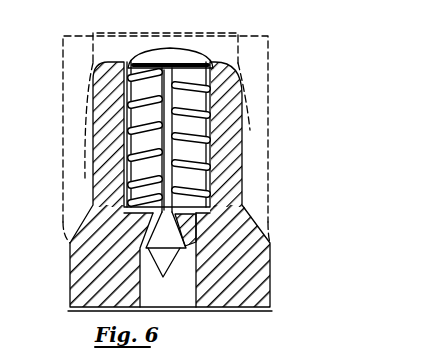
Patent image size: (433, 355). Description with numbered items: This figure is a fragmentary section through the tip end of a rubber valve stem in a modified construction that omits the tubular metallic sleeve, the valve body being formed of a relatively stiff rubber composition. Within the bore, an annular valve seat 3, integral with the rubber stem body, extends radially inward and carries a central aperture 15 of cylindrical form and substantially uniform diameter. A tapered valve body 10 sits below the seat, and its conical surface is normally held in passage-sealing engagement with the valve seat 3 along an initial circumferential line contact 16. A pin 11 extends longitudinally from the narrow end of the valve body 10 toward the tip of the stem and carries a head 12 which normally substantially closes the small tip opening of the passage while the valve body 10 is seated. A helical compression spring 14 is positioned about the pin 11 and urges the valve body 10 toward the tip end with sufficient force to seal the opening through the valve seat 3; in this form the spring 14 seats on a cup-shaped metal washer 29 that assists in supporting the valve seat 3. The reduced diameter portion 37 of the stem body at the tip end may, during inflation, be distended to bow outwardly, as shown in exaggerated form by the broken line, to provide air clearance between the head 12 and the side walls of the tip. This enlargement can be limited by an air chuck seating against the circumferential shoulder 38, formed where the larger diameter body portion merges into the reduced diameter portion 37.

The annular valve seat 3 is at (210, 247).
The tapered valve body 10 is at (164, 276).
The pin 11 is at (160, 148).
The head 12 is at (182, 53).
The helical compression spring 14 is at (243, 105).
The central aperture 15 is at (186, 240).
The circumferential line contact 16 is at (142, 253).
The cup-shaped metal washer 29 is at (93, 196).
The reduced diameter portion 37 is at (242, 136).
The circumferential shoulder 38 is at (257, 225).